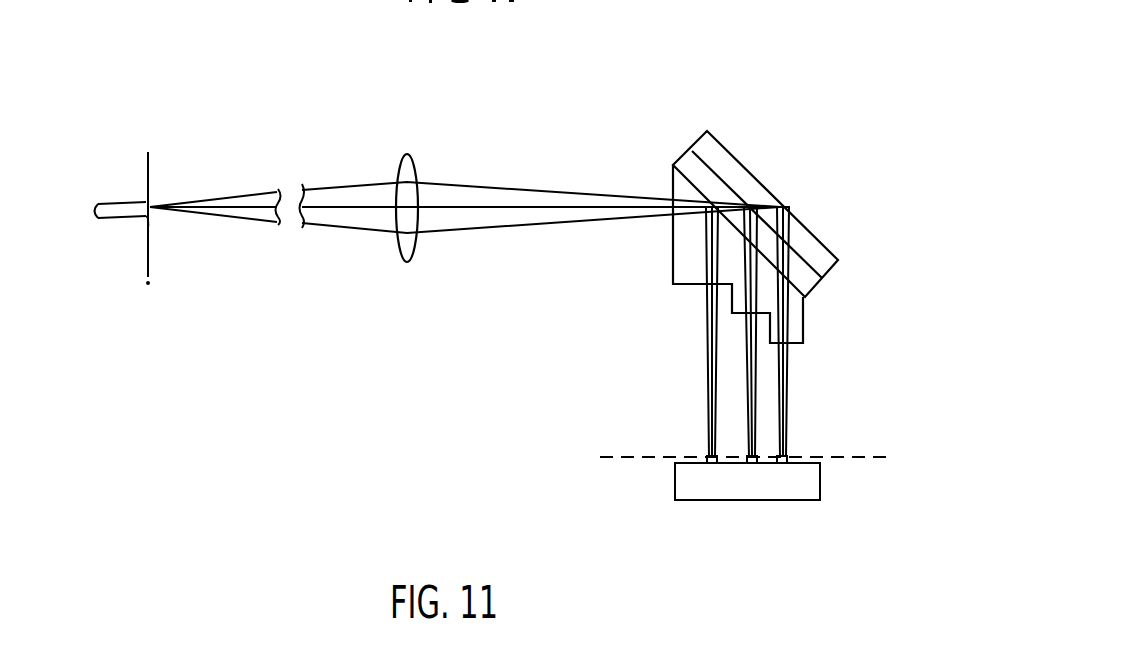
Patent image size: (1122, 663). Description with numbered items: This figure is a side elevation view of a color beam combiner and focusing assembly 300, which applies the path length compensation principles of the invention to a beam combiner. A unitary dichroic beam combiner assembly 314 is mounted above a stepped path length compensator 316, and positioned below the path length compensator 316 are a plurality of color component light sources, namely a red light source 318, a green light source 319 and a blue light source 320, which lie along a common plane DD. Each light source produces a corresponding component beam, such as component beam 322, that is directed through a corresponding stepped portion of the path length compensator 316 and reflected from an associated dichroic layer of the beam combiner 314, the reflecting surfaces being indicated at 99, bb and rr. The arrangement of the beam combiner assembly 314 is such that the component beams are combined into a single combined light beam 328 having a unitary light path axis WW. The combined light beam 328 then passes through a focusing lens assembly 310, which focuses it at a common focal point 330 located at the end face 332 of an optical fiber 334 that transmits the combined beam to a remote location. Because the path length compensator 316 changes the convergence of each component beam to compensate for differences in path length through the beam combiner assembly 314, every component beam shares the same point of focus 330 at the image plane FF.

The beam combiner and focusing assembly 300 is at (702, 82).
The lens assembly 310 is at (410, 163).
The dichroic beam combiner assembly 314 is at (760, 173).
The path length compensator 316 is at (805, 302).
The red light source 318 is at (782, 463).
The green light source 319 is at (752, 463).
The blue light source 320 is at (712, 463).
The component beam 322 is at (787, 378).
The combined light beam 328 is at (548, 191).
The common focal point 330 is at (152, 197).
The end face 332 is at (146, 216).
The optical fiber 334 is at (130, 216).
The reflective surface 99 is at (753, 280).
The image plane FF is at (148, 165).
The light path axis WW is at (497, 208).
The reflected beam bb is at (712, 249).
The reflective surface rr is at (803, 320).
The detector plane DD is at (772, 463).